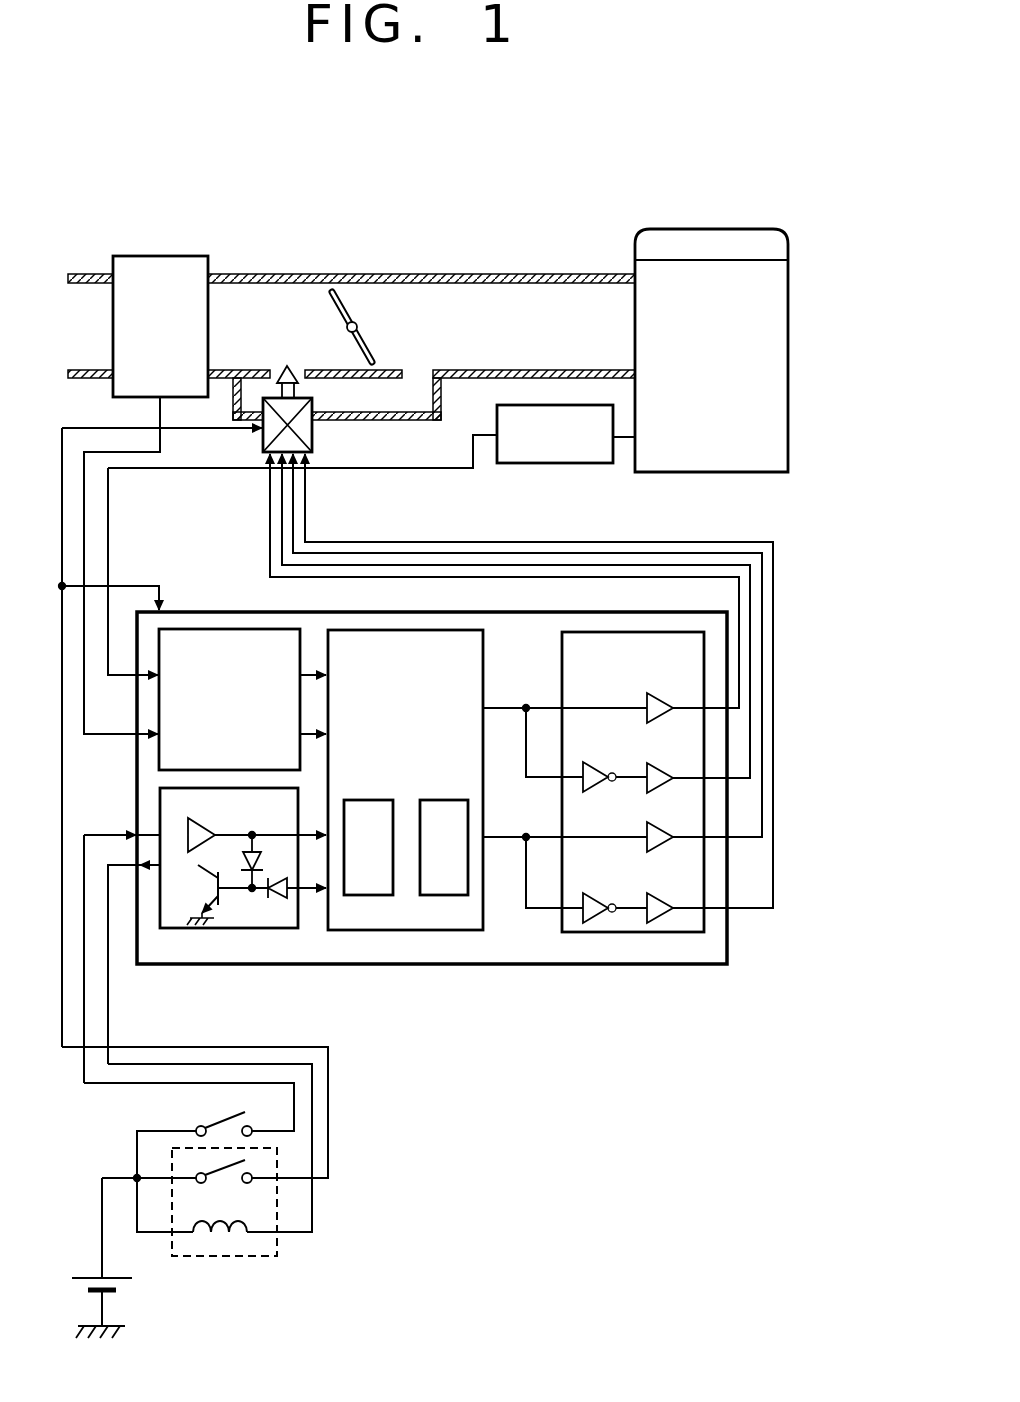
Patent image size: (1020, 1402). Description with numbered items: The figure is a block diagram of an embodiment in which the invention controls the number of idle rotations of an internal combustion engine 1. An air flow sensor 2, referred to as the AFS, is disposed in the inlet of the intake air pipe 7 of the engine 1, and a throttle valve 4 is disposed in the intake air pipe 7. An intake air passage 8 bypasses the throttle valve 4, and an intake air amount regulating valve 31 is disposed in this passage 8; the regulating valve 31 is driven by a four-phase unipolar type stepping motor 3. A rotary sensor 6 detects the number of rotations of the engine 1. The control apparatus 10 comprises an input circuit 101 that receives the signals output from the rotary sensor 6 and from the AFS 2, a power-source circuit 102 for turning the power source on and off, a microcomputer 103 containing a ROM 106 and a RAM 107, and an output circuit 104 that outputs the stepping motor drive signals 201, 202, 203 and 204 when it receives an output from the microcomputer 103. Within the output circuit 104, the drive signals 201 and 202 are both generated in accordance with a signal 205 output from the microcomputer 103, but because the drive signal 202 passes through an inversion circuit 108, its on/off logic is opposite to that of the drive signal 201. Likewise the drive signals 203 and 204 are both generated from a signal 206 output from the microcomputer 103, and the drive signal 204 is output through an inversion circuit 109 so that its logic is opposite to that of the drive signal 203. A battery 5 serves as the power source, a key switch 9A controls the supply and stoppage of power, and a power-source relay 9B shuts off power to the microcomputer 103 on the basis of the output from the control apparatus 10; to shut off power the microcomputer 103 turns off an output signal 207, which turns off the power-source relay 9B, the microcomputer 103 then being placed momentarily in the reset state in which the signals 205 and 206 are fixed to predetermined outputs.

The internal combustion engine 1 is at (717, 228).
The air flow sensor 2 is at (160, 255).
The stepping motor 3 is at (314, 432).
The intake air amount regulating valve 31 is at (286, 363).
The throttle valve 4 is at (345, 308).
The battery 5 is at (88, 1277).
The rotary sensor 6 is at (548, 465).
The intake air pipe 7 is at (424, 273).
The intake air passage 8 is at (402, 393).
The key switch 9A is at (245, 1112).
The power-source relay 9B is at (223, 1258).
The control apparatus 10 is at (547, 968).
The input circuit 101 is at (220, 628).
The power-source circuit 102 is at (220, 930).
The microcomputer 103 is at (405, 827).
The output circuit 104 is at (637, 829).
The ROM 106 is at (370, 799).
The RAM 107 is at (443, 799).
The inversion circuit 108 is at (590, 762).
The inversion circuit 109 is at (590, 893).
The stepping motor drive signal 201 is at (739, 648).
The stepping motor drive signal 202 is at (750, 712).
The stepping motor drive signal 203 is at (762, 775).
The stepping motor drive signal 204 is at (773, 842).
The signal 205 is at (511, 706).
The signal 206 is at (511, 835).
The output signal 207 is at (313, 893).